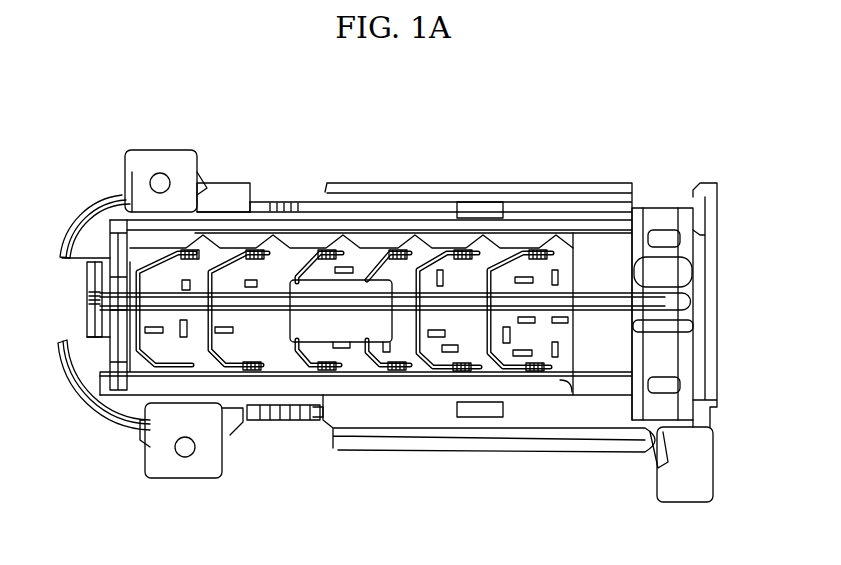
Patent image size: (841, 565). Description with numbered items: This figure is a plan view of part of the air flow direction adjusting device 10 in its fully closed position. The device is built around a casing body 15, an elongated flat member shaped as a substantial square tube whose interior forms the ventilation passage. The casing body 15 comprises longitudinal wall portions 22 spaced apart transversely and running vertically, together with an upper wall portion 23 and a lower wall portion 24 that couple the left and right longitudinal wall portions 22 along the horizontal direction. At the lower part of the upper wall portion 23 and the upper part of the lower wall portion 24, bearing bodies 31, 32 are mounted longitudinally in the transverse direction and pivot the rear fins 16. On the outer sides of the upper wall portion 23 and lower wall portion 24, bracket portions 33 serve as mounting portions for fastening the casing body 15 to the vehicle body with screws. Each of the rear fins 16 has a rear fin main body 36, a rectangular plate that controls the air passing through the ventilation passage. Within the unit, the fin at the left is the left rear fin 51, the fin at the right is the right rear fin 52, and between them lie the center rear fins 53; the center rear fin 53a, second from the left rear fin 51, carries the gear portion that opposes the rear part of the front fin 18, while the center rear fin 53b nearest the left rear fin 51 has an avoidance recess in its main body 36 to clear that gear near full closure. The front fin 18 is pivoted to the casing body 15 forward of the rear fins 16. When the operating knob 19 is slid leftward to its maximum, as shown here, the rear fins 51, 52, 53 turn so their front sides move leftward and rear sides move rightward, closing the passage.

The air flow direction adjusting device 10 is at (485, 108).
The casing body 15 is at (617, 183).
The rear fins 16 is at (328, 380).
The front fin 18 is at (547, 286).
The operating knob 19 is at (370, 280).
The longitudinal wall portions 22 is at (108, 370).
The upper wall portion 23 is at (230, 184).
The lower wall portion 24 is at (353, 418).
The bearing body 31 is at (292, 236).
The bearing body 32 is at (287, 387).
The bracket portions 33 is at (170, 151).
The rear fin main body 36 is at (190, 265).
The left rear fin 51 is at (155, 352).
The right rear fin 52 is at (519, 354).
The center rear fins 53 is at (378, 354).
The center rear fin 53a is at (318, 352).
The center rear fin 53b is at (238, 352).